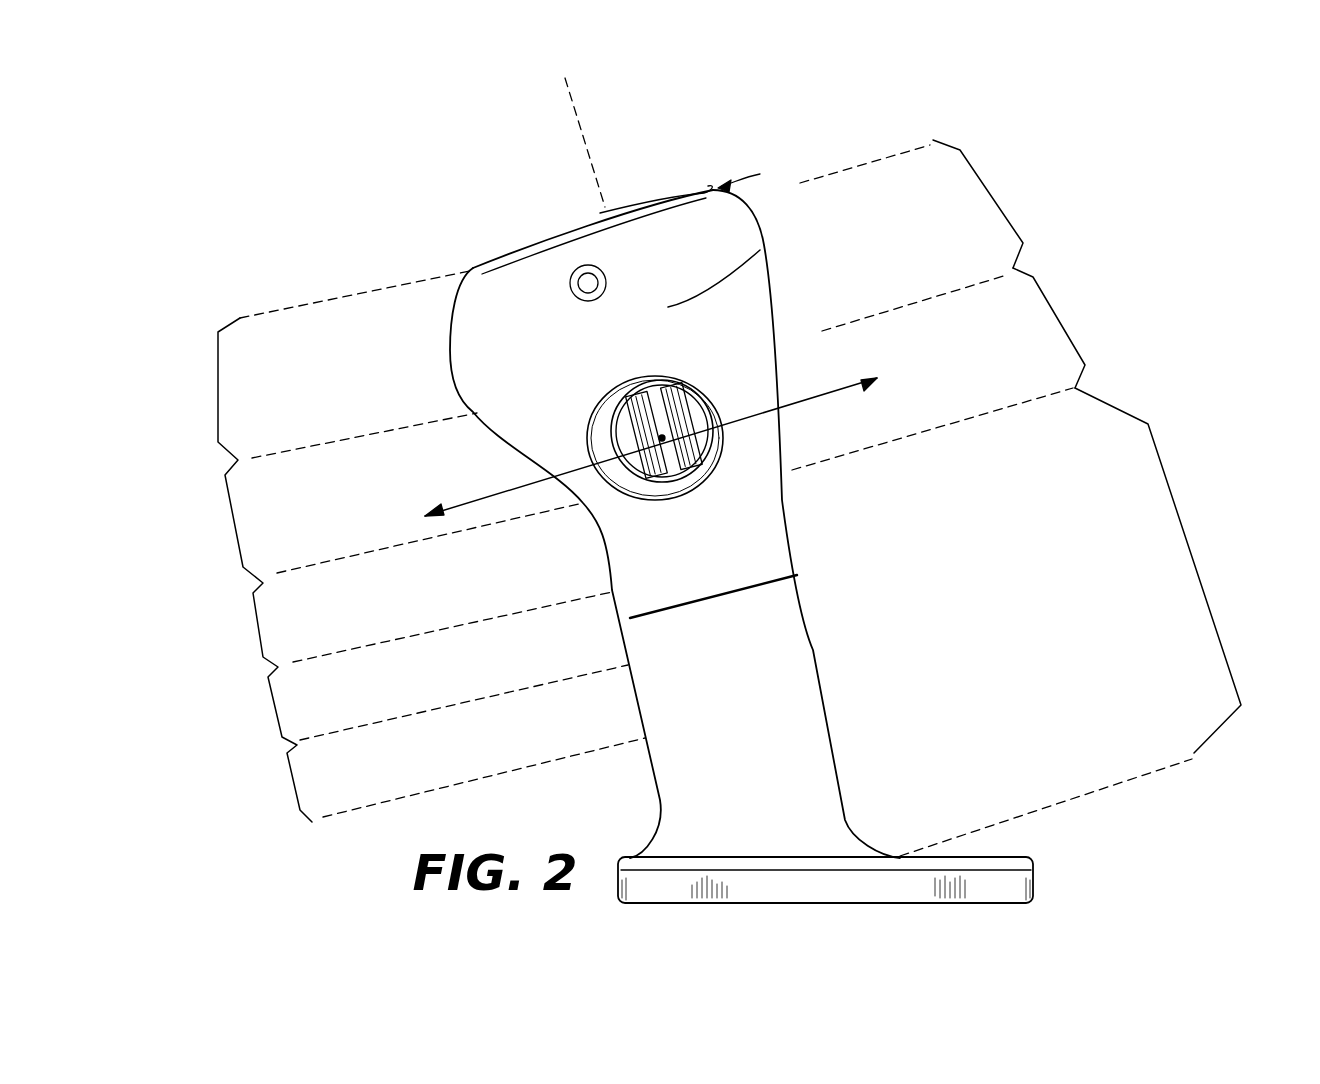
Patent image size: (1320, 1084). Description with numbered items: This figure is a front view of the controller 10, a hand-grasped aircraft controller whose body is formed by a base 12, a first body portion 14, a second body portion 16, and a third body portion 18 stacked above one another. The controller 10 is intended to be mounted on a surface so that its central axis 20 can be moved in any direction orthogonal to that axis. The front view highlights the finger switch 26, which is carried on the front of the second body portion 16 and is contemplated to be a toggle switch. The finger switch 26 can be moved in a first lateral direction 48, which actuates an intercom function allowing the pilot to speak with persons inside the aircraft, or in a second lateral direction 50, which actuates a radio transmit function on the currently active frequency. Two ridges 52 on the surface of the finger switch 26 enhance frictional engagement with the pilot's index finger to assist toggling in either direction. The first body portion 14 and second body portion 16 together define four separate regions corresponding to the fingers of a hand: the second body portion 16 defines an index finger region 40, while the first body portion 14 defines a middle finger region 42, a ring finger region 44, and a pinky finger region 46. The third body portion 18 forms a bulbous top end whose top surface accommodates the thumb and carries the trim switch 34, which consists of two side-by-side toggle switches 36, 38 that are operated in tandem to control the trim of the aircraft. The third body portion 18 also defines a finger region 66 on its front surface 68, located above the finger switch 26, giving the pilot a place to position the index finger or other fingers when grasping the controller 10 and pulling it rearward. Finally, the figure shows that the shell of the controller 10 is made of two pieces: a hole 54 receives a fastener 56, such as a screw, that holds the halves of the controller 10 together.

The controller 10 is at (388, 367).
The base 12 is at (978, 867).
The first body portion 14 is at (1196, 564).
The second body portion 16 is at (1063, 315).
The third body portion 18 is at (993, 195).
The central axis 20 is at (588, 125).
The finger switch 26 is at (713, 428).
The trim switch 34 is at (754, 178).
The toggle switch 36 is at (683, 188).
The toggle switch 38 is at (605, 210).
The index finger region 40 is at (237, 533).
The middle finger region 42 is at (258, 625).
The ring finger region 44 is at (275, 703).
The pinky finger region 46 is at (290, 778).
The first lateral direction 48 is at (508, 490).
The second lateral direction 50 is at (788, 407).
The ridges 52 is at (668, 483).
The hole 54 is at (569, 283).
The fastener 56 is at (579, 264).
The finger region 66 is at (218, 378).
The front surface 68 is at (760, 251).